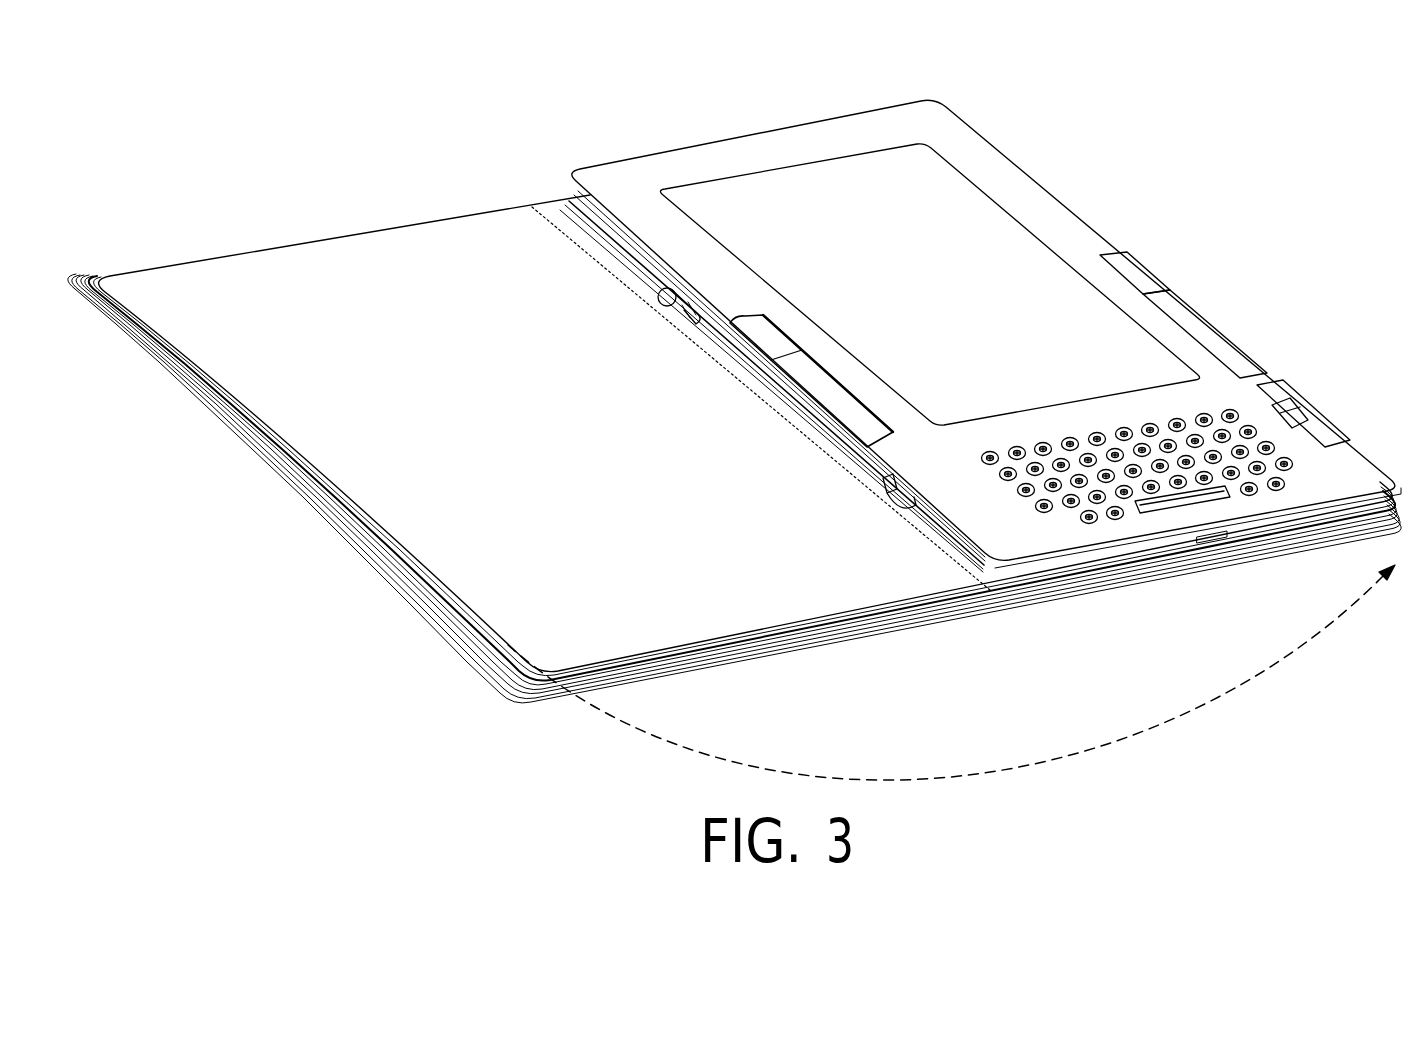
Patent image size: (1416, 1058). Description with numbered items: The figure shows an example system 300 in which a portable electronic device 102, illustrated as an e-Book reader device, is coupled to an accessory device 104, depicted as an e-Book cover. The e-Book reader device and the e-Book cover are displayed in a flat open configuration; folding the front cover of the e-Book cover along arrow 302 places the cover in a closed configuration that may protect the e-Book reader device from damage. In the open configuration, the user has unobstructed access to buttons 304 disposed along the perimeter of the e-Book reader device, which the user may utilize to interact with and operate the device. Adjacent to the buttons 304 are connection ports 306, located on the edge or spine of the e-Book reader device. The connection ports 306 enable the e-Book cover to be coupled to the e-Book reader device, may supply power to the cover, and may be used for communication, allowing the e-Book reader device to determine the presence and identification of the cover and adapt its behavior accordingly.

The system 300 is at (734, 421).
The portable electronic device 102 is at (942, 121).
The accessory device 104 is at (345, 278).
The arrow 302 is at (951, 672).
The buttons 304 is at (768, 338).
The connection ports 306 is at (663, 297).